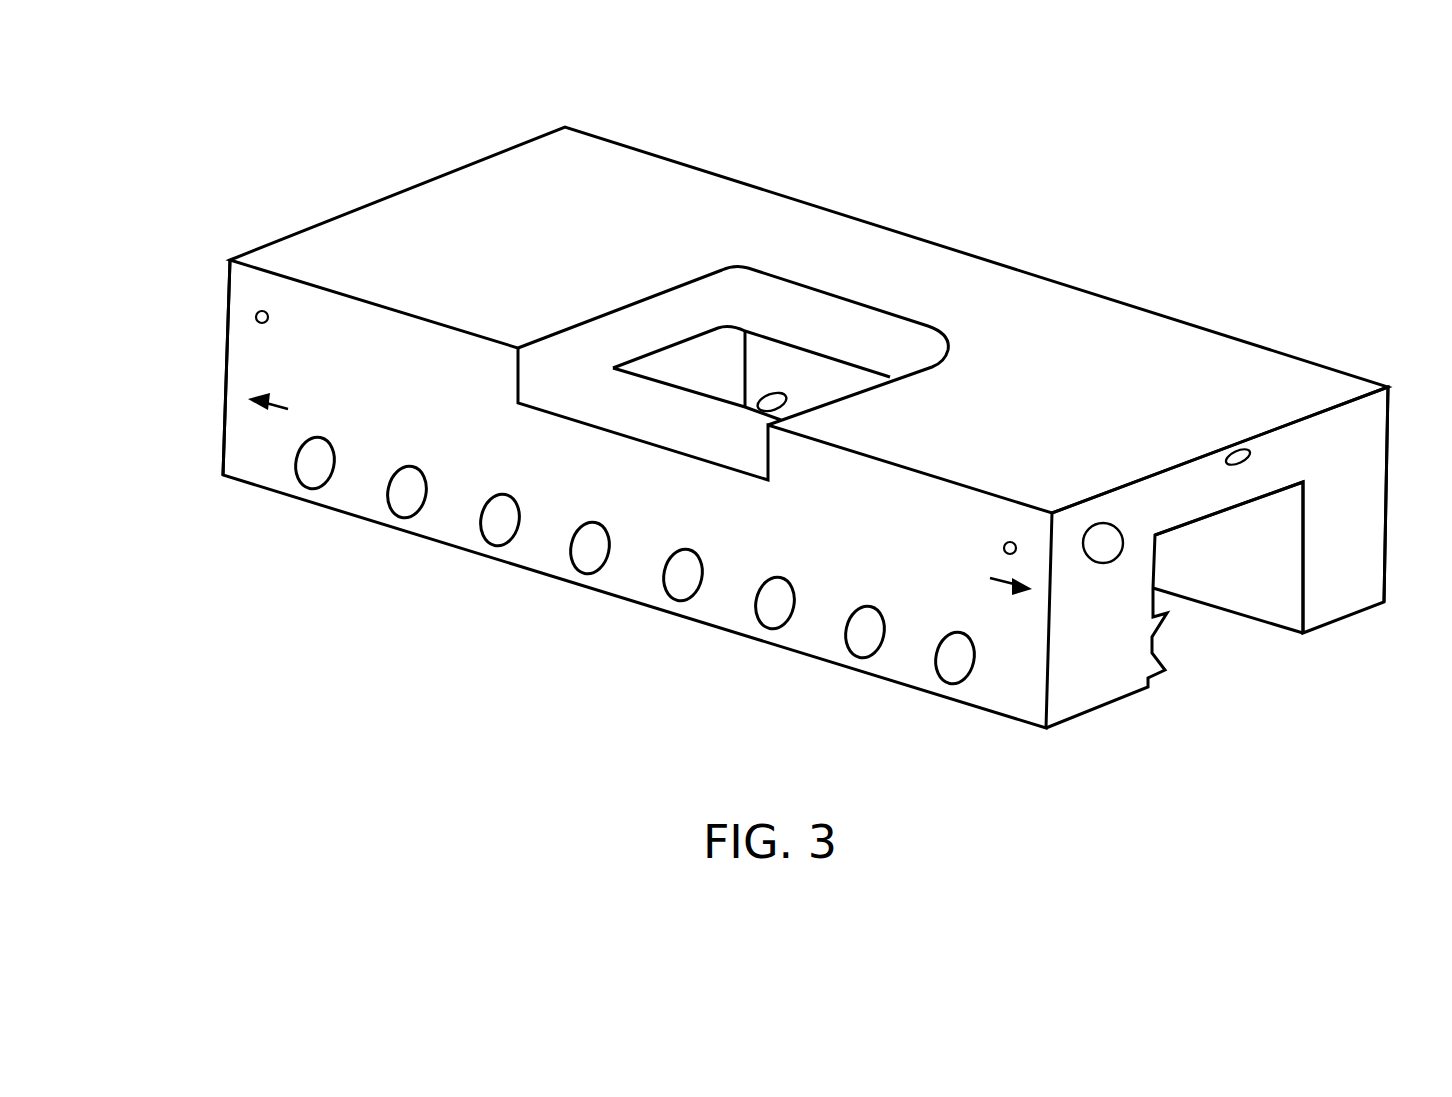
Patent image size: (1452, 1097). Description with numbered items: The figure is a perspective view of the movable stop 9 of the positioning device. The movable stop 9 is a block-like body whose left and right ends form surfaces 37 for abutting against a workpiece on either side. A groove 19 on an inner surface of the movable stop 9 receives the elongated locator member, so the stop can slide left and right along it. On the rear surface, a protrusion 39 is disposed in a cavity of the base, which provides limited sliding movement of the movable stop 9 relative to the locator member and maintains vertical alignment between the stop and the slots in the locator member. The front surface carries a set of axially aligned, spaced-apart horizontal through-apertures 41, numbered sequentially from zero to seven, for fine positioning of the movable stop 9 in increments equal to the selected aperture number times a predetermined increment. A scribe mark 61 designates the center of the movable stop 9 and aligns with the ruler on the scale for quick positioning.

The movable stop 9 is at (1040, 277).
The groove 19 is at (1158, 648).
The surfaces 37 is at (226, 342).
The protrusion 39 is at (1233, 508).
The through-apertures 41 is at (316, 490).
The scribe mark 61 is at (700, 418).